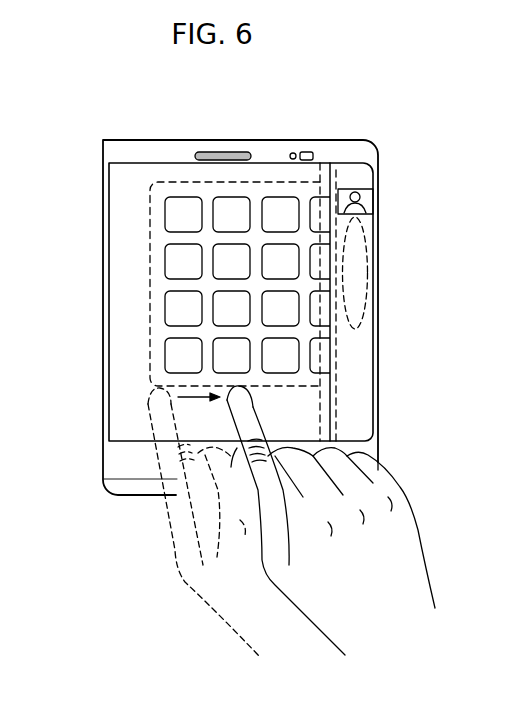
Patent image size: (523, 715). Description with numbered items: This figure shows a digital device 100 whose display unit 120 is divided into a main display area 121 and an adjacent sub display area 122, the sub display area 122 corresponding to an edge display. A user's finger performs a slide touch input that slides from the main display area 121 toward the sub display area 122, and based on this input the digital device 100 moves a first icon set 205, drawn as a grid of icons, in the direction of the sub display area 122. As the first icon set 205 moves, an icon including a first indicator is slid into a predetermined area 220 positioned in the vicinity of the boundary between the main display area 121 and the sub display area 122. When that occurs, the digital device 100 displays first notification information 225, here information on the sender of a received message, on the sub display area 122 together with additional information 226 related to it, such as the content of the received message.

The digital device 100 is at (127, 140).
The display unit 120 is at (108, 331).
The main display area 121 is at (211, 268).
The sub display area 122 is at (386, 302).
The first icon set 205 is at (268, 182).
The predetermined area 220 is at (336, 393).
The first notification information 225 is at (376, 198).
The additional information 226 is at (368, 270).